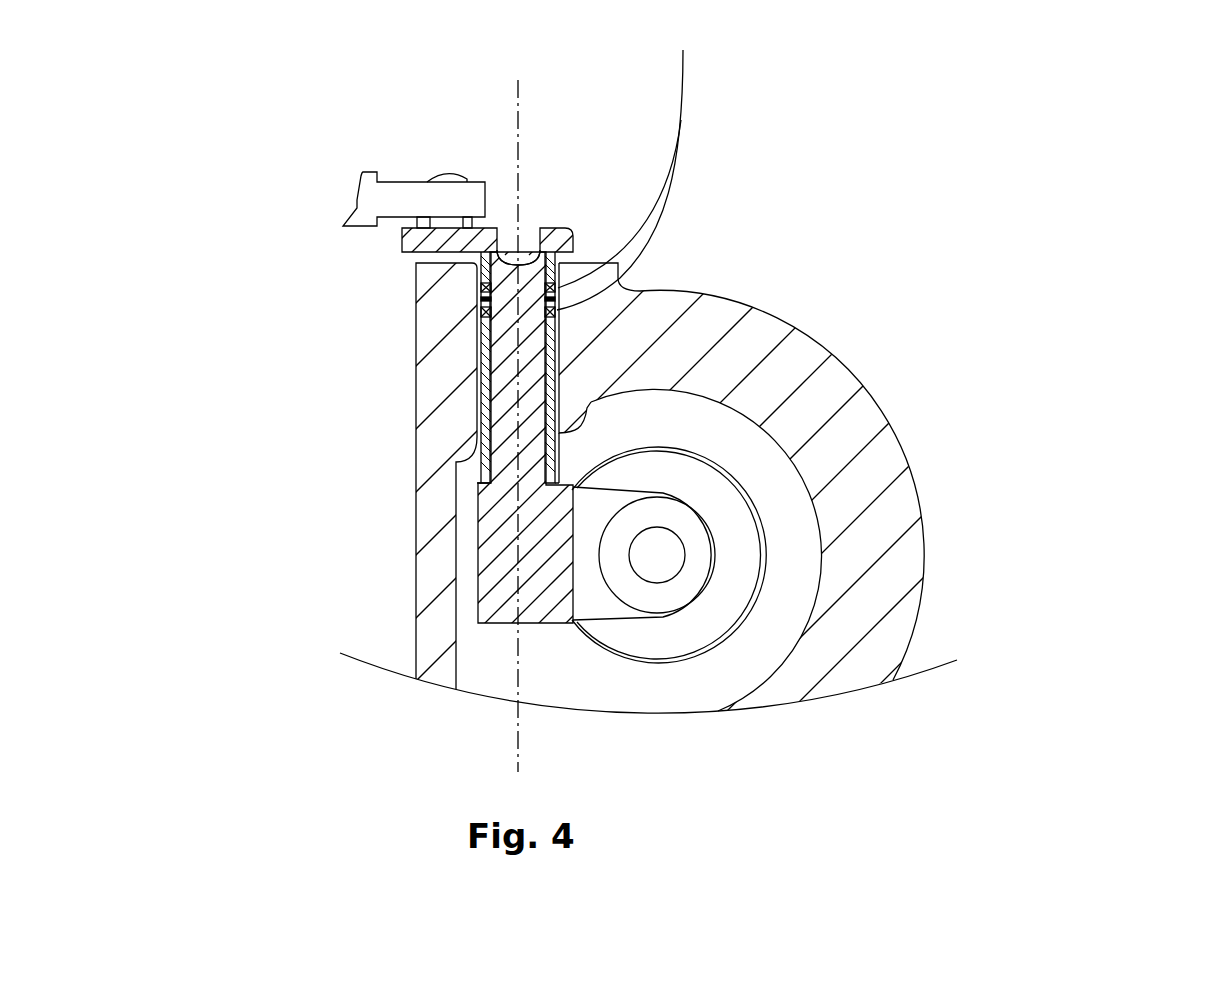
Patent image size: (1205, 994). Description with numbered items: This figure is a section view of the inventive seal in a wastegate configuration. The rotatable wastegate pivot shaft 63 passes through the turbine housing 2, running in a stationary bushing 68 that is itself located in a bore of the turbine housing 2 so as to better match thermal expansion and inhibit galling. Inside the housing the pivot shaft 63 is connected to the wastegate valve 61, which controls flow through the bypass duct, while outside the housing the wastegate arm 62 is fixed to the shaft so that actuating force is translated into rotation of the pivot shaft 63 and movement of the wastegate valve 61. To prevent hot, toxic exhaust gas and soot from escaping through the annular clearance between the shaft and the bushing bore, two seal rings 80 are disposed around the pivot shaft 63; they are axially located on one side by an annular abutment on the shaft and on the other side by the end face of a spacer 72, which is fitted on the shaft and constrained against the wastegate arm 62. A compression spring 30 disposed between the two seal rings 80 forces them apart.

The turbine housing 2 is at (887, 457).
The compression spring 30 is at (488, 293).
The wastegate valve 61 is at (717, 600).
The wastegate arm 62 is at (490, 268).
The wastegate pivot shaft 63 is at (487, 519).
The bushing 68 is at (477, 400).
The spacer 72 is at (494, 262).
The seal rings 80 is at (626, 168).